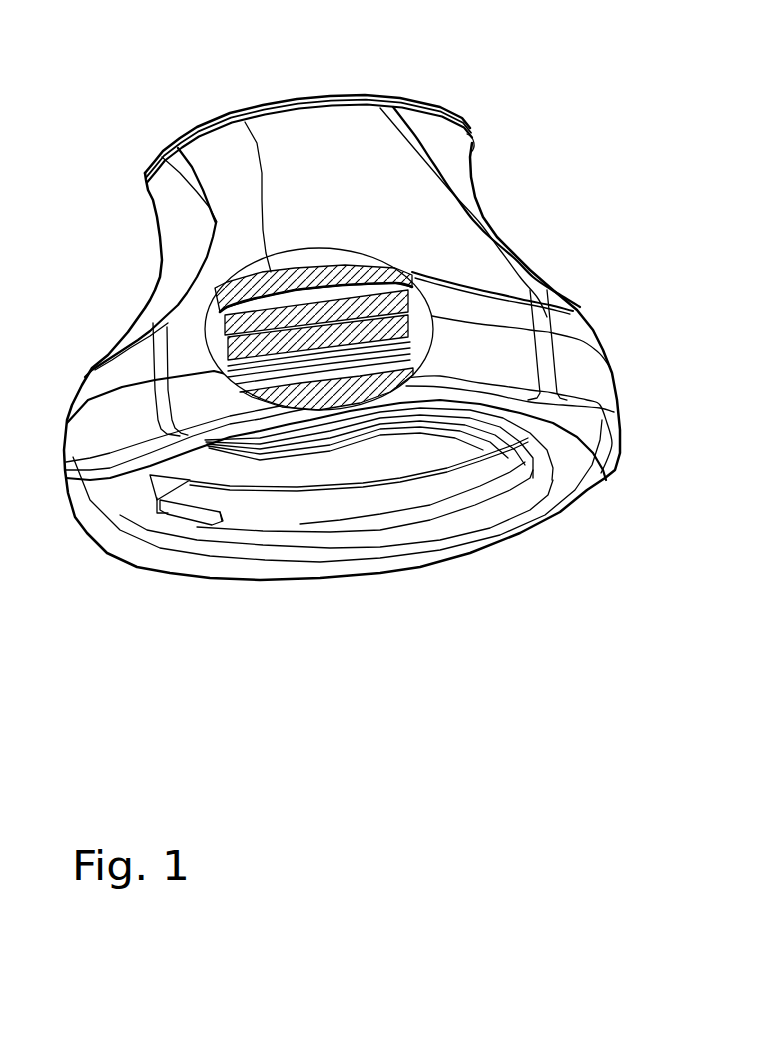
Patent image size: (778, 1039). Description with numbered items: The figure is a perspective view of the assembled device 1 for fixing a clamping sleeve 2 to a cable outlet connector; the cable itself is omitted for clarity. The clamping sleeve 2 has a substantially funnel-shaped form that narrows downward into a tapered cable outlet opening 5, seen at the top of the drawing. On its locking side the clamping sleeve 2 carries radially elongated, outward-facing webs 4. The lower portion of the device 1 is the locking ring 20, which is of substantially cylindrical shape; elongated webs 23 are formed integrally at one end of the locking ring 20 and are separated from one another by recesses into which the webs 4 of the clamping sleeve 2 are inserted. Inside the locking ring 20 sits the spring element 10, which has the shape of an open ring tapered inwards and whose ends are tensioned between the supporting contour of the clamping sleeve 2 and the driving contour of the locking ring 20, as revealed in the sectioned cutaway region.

The device 1 is at (556, 199).
The clamping sleeve 2 is at (370, 175).
The cable outlet opening 5 is at (293, 97).
The elongated webs 23 is at (215, 289).
The webs 4 is at (219, 320).
The spring element 10 is at (417, 497).
The locking ring 20 is at (577, 380).